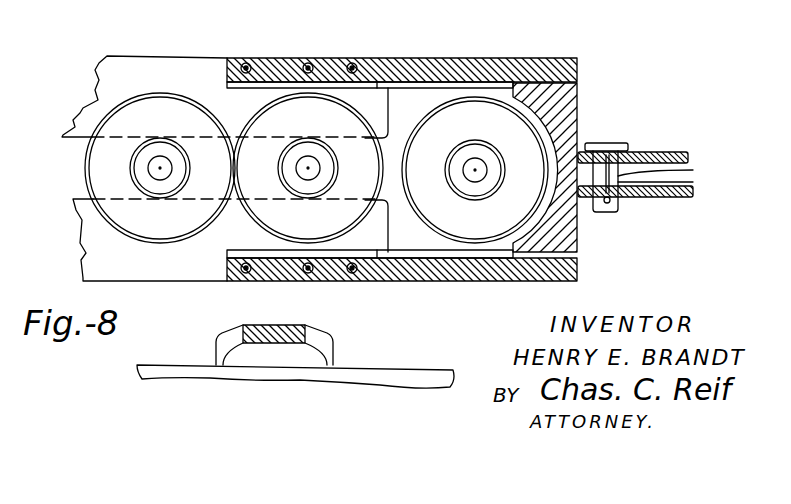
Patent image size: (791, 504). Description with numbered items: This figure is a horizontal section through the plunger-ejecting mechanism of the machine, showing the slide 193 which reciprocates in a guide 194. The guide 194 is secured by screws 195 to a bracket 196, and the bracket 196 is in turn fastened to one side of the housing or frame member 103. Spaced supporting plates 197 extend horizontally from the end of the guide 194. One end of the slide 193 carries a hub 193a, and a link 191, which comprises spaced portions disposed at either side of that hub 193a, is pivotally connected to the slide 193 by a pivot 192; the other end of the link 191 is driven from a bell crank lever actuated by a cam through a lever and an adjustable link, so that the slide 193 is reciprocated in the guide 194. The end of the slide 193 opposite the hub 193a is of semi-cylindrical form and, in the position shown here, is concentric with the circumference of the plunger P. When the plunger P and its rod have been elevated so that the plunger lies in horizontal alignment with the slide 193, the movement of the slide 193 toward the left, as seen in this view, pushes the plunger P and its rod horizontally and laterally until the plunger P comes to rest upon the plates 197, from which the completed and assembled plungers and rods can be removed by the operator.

The plunger P is at (164, 86).
The frame member 103 is at (368, 368).
The link 191 is at (669, 151).
The pivot 192 is at (602, 142).
The slide 193 is at (521, 86).
The hub 193a is at (693, 176).
The guide 194 is at (553, 59).
The screws 195 is at (353, 62).
The bracket 196 is at (328, 341).
The supporting plates 197 is at (132, 62).